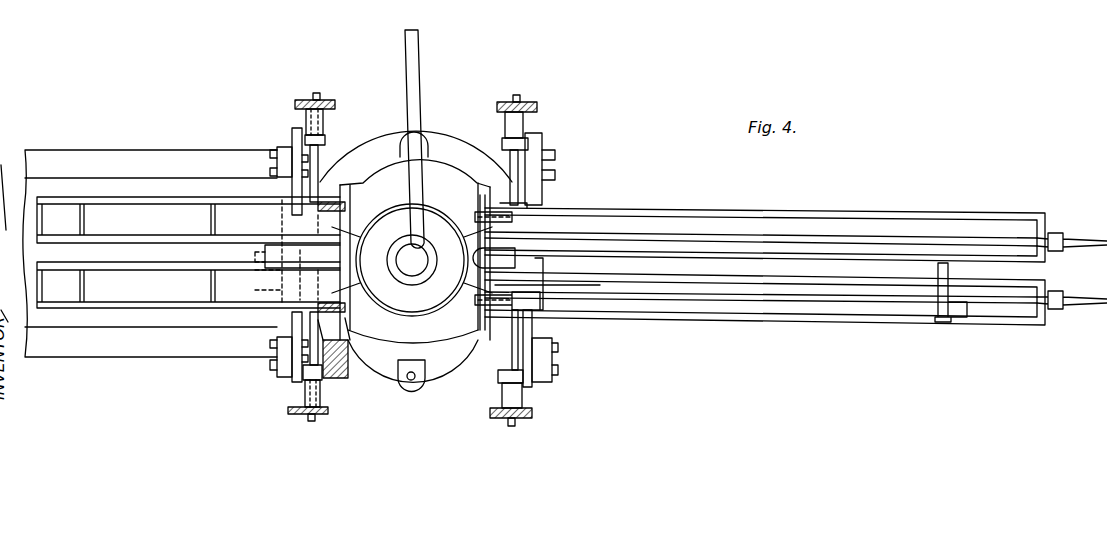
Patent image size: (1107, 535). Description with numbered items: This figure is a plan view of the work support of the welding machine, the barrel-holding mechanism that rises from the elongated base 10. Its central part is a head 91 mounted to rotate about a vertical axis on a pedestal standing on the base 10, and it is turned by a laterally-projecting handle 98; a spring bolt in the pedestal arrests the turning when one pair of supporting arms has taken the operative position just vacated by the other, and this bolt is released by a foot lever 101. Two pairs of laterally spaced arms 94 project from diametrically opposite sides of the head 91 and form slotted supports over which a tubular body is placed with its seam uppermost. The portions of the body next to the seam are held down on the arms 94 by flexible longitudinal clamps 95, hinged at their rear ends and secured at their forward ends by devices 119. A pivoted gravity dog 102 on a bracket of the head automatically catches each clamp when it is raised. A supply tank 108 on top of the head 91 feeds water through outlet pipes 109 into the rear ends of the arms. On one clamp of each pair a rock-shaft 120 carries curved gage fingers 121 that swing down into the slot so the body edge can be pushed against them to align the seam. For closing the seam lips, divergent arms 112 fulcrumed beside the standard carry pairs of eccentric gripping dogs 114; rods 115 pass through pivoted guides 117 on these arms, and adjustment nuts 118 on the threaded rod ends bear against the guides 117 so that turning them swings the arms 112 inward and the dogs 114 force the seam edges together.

The elongated base 10 is at (96, 152).
The head 91 is at (416, 261).
The arms 94 is at (842, 198).
The longitudinal clamps 95 is at (690, 243).
The handle 98 is at (421, 122).
The foot lever 101 is at (345, 378).
The gravity dog 102 is at (478, 216).
The supply tank 108 is at (412, 267).
The outlet pipes 109 is at (360, 228).
The arms 112 is at (292, 197).
The gripping dogs 114 is at (277, 163).
The rods 115 is at (320, 99).
The guides 117 is at (318, 148).
The adjustment nuts 118 is at (322, 128).
The securing devices 119 is at (1090, 250).
The rock-shaft 120 is at (865, 312).
The gage fingers 121 is at (745, 300).